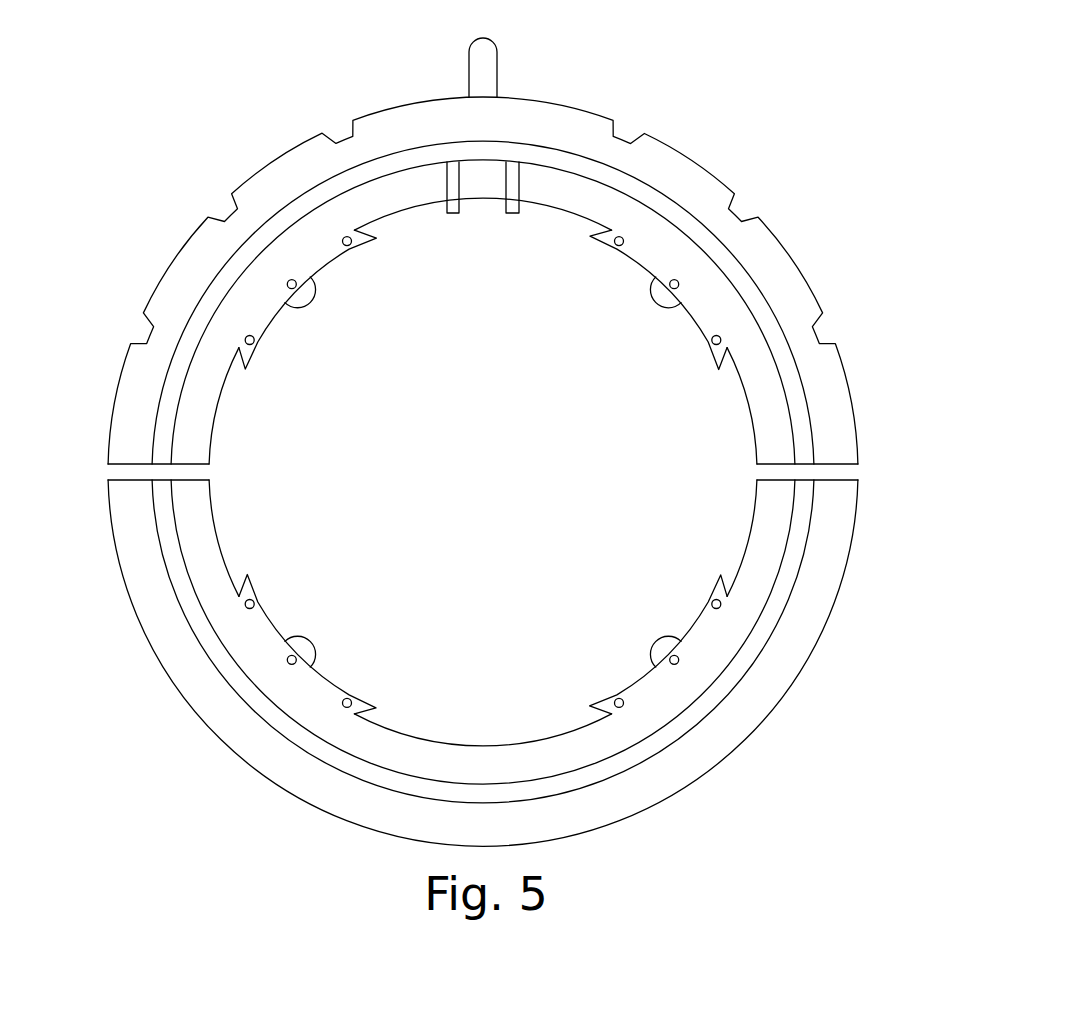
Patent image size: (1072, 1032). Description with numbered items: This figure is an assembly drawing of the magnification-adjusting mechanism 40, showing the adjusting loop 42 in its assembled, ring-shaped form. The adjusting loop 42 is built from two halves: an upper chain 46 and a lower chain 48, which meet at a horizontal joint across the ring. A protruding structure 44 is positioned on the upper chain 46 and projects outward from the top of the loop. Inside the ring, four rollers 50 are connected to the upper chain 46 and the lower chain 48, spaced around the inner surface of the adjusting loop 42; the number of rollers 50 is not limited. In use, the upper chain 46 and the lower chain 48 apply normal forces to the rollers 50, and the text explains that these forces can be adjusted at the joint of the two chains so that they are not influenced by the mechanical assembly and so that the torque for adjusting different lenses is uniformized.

The magnification-adjusting mechanism 40 is at (904, 167).
The adjusting loop 42 is at (943, 332).
The protruding structure 44 is at (468, 70).
The upper chain 46 is at (848, 383).
The lower chain 48 is at (857, 513).
The rollers 50 is at (307, 296).